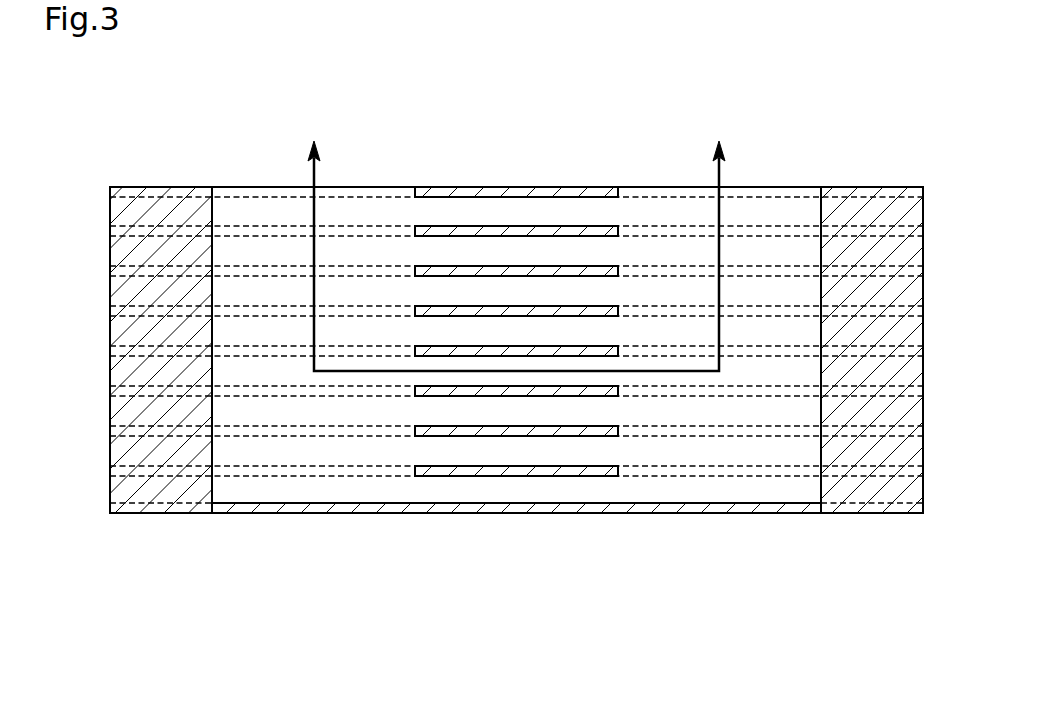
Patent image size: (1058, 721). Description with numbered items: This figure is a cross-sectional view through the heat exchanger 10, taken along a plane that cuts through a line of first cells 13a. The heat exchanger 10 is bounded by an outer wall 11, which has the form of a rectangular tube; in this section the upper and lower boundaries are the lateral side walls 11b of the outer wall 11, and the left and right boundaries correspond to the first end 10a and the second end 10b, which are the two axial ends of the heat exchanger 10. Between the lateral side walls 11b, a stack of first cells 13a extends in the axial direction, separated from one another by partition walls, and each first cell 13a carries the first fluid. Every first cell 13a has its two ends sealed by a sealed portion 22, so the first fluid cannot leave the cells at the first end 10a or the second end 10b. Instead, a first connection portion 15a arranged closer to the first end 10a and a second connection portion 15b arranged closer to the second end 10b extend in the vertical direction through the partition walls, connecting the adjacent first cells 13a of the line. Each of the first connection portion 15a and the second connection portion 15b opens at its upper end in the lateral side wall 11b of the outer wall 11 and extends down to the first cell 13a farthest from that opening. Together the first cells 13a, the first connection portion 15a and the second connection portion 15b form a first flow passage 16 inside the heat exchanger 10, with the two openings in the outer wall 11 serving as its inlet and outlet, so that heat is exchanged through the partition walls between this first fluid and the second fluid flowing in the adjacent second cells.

The heat exchanger 10 is at (620, 110).
The first end 10a is at (129, 313).
The second end 10b is at (921, 163).
The outer wall 11 is at (516, 186).
The lateral side wall 11b is at (592, 186).
The first cell 13a is at (110, 489).
The first connection portion 15a is at (351, 248).
The second connection portion 15b is at (681, 248).
The first flow passage 16 is at (722, 170).
The sealed portion 22 is at (821, 490).